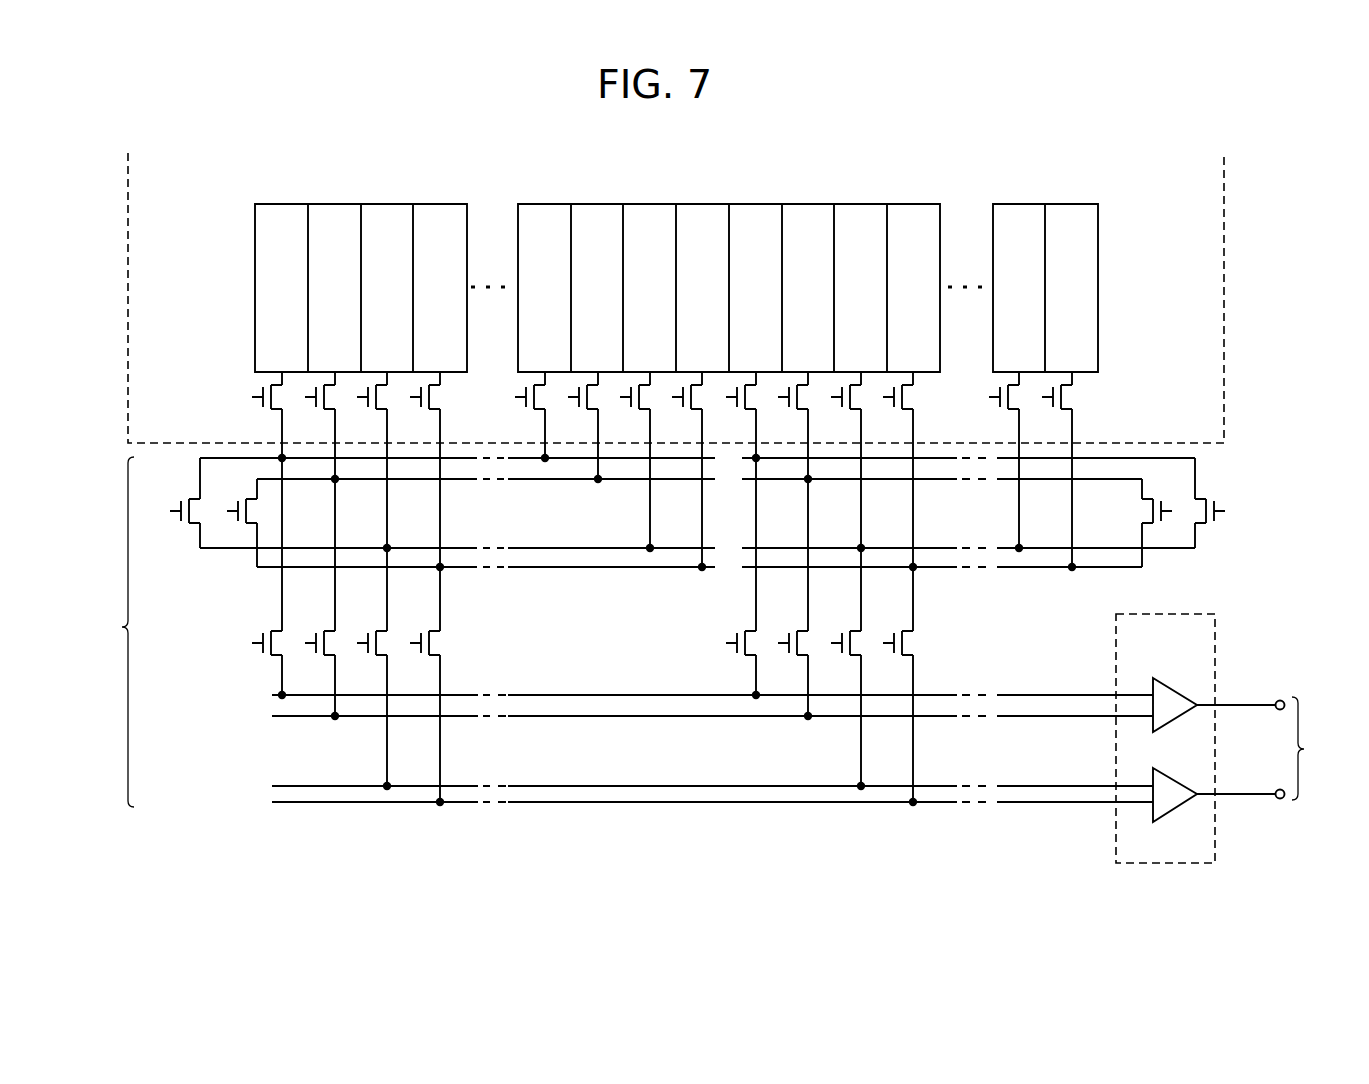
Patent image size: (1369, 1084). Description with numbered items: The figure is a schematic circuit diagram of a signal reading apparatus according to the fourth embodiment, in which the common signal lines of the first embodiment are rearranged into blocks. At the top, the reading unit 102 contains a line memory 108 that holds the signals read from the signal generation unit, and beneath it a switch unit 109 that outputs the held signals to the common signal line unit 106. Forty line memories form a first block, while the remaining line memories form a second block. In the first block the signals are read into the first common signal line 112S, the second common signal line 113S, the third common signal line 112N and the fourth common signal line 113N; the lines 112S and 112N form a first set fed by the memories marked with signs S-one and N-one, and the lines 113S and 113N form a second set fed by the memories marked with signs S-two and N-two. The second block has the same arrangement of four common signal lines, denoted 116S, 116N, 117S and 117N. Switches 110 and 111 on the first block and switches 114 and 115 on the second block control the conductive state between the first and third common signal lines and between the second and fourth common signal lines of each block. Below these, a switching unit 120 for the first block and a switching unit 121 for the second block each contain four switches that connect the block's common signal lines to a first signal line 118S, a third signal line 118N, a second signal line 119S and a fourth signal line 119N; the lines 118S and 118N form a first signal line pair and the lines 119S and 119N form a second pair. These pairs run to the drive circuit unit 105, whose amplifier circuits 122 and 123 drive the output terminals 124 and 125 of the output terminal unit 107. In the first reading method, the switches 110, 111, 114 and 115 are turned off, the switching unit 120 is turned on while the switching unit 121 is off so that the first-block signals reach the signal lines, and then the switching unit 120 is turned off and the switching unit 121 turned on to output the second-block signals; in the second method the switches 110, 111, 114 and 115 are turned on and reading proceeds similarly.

The reading unit 102 is at (128, 303).
The drive circuit unit 105 is at (1126, 865).
The common signal line unit 106 is at (105, 632).
The output terminal unit 107 is at (1319, 748).
The line memory 108 is at (220, 204).
The switch unit 109 is at (220, 374).
The switch 110 is at (206, 514).
The switch 111 is at (253, 512).
The first common signal line 112S is at (449, 459).
The third common signal line 112N is at (540, 481).
The second common signal line 113S is at (463, 549).
The fourth common signal line 113N is at (603, 569).
The switch 114 is at (1190, 510).
The switch 115 is at (1143, 518).
The first common signal line of second block 116S is at (1092, 458).
The third common signal line of second block 116N is at (935, 481).
The second common signal line of second block 117S is at (935, 550).
The fourth common signal line of second block 117N is at (1038, 569).
The first signal line 118S is at (458, 697).
The third signal line 118N is at (622, 718).
The second signal line 119S is at (457, 804).
The fourth signal line 119N is at (640, 805).
The switching unit 120 is at (248, 618).
The switching unit 121 is at (719, 618).
The amplifier circuit 122 is at (1173, 690).
The amplifier circuit 123 is at (1172, 808).
The output terminal 124 is at (1280, 700).
The output terminal 125 is at (1282, 800).